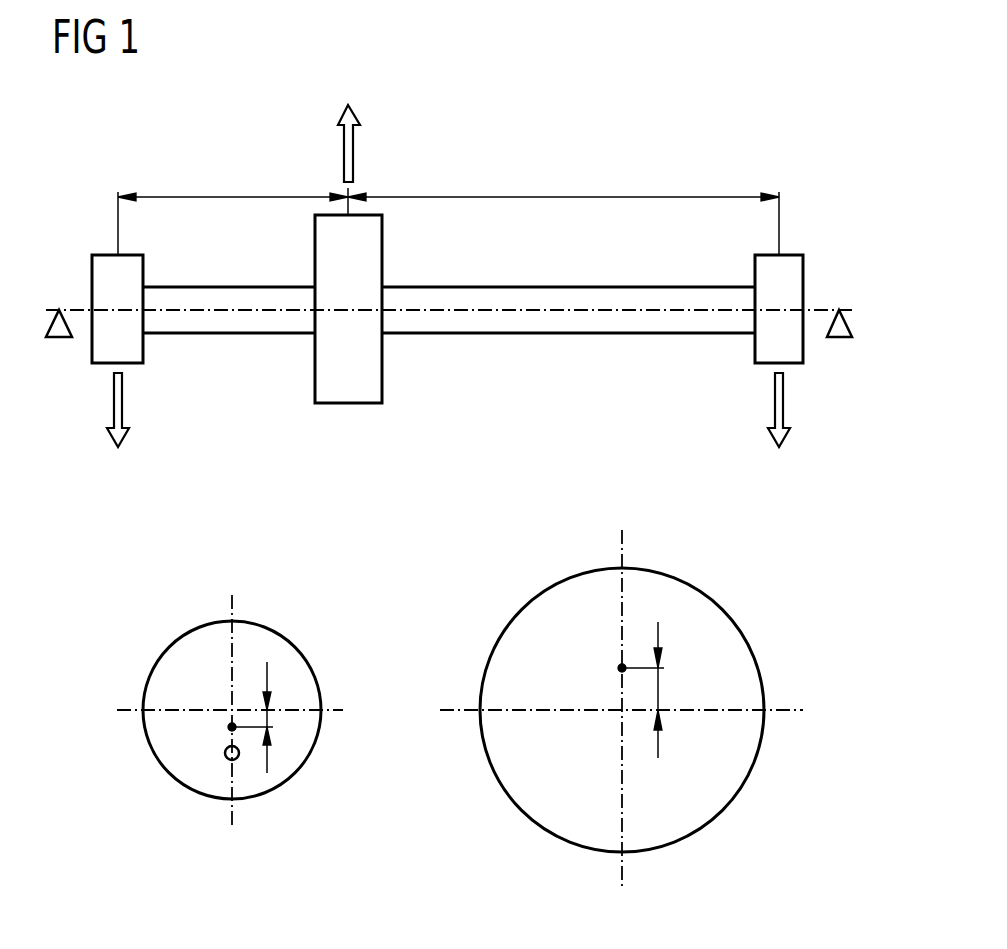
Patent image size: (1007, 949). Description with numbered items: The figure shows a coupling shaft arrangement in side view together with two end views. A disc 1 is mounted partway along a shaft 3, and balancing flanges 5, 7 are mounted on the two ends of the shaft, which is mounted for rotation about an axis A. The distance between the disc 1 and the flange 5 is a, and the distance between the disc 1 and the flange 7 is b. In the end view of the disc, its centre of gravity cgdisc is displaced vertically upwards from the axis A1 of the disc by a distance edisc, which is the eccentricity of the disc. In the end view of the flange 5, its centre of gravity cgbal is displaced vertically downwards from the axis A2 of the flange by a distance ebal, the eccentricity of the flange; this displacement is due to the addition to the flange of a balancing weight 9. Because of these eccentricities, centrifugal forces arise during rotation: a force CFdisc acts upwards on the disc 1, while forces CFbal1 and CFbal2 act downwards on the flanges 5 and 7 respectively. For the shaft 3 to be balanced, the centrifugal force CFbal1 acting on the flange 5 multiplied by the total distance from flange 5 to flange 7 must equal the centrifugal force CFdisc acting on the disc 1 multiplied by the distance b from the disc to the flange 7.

The disc 1 is at (351, 392).
The shaft 3 is at (542, 293).
The balancing flange 5 is at (105, 273).
The balancing flange 7 is at (792, 273).
The balancing weight 9 is at (227, 758).
The axis A is at (638, 308).
The axis of disc A1 is at (621, 712).
The axis of flange A2 is at (232, 710).
The distance a is at (233, 197).
The distance b is at (565, 197).
The centrifugal force acting on disc CFdisc is at (352, 147).
The centrifugal force acting on flange CFbal1 is at (121, 405).
The centrifugal force acting on flange CFbal2 is at (776, 408).
The eccentricity of flange ebal is at (268, 718).
The eccentricity of disc edisc is at (660, 690).
The centre of gravity of balancing flange cgbal is at (230, 727).
The centre of gravity of disc cgdisc is at (620, 668).